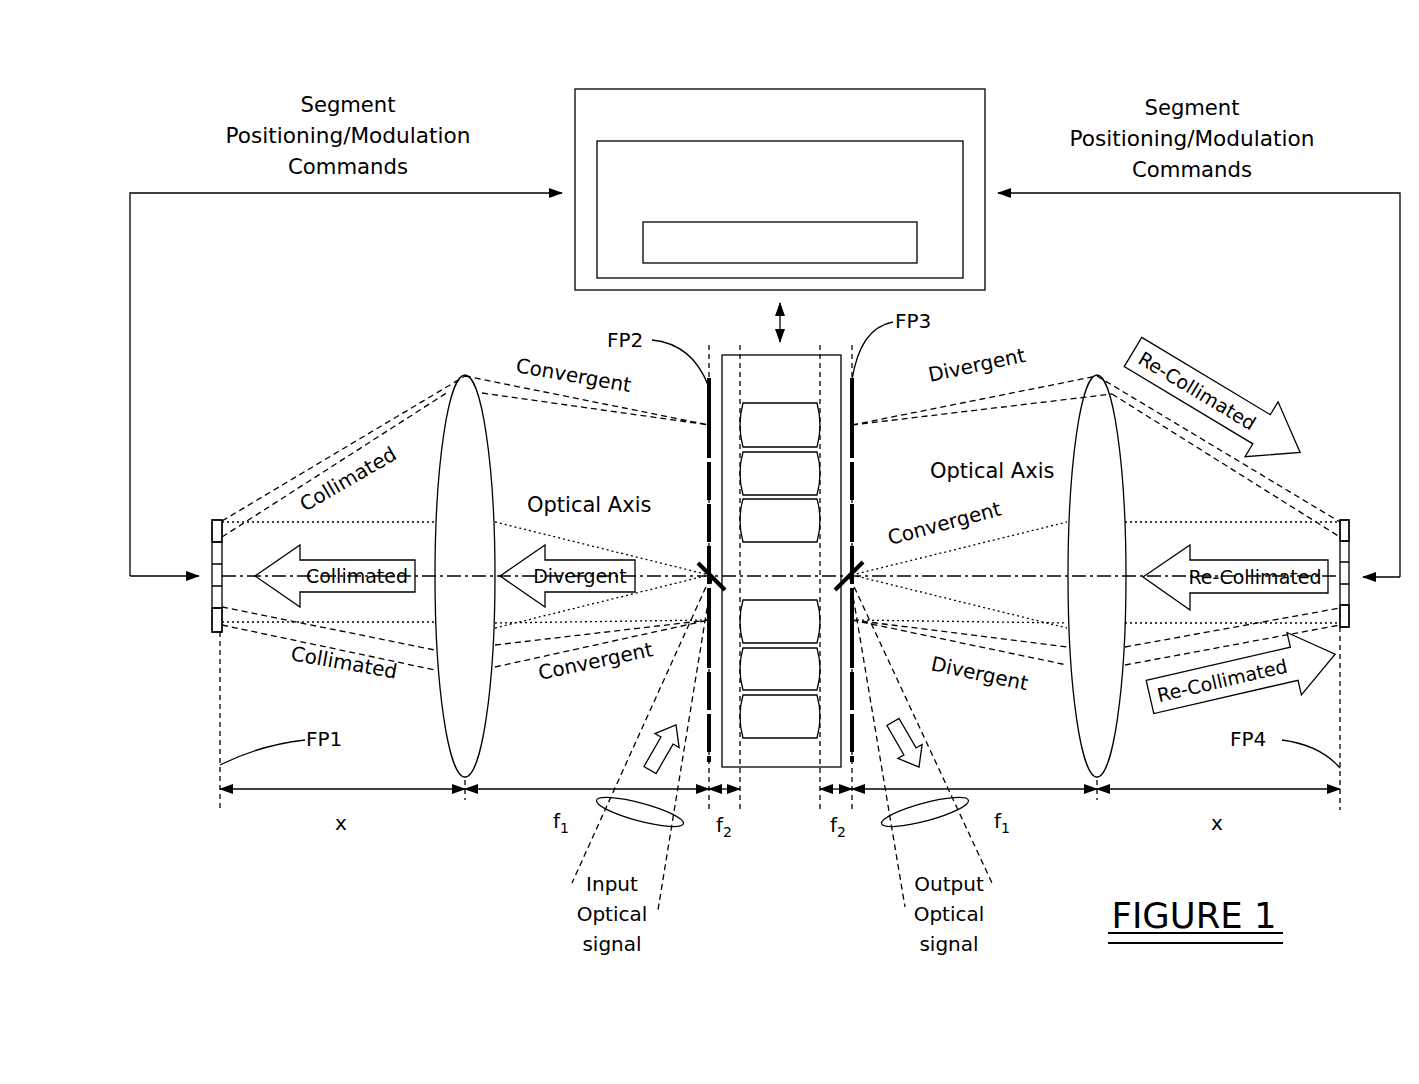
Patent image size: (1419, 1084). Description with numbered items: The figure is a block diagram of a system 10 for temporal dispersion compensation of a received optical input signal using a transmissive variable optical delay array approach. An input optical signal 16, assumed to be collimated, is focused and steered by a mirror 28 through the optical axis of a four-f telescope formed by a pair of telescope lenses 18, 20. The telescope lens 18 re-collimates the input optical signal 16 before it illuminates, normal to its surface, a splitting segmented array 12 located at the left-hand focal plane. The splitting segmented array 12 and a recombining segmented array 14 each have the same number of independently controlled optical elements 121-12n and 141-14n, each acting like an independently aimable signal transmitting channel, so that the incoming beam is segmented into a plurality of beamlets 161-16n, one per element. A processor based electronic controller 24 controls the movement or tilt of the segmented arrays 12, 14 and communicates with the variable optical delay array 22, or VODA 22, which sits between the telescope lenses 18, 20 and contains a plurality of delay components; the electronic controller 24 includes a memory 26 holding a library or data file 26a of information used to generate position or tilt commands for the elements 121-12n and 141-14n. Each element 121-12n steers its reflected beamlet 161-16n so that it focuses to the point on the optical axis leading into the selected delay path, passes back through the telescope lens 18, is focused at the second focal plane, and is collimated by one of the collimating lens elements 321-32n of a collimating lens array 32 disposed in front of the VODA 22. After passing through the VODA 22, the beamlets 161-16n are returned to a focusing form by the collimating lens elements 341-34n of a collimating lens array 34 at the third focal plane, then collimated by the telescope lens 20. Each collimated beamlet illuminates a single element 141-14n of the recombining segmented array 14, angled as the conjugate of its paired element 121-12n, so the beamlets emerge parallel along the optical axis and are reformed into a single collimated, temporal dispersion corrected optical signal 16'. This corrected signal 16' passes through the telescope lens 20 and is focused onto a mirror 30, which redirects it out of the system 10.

The system 10 is at (1193, 322).
The splitting segmented array 12 is at (198, 592).
The optical element of splitting segmented array 121 is at (212, 520).
The optical element of splitting segmented array 12n is at (202, 632).
The recombining segmented array 14 is at (1363, 598).
The optical element of recombining segmented array 141 is at (1350, 522).
The optical element of recombining segmented array 14n is at (1350, 627).
The input optical signal 16 is at (633, 744).
The beamlet 161 is at (500, 375).
The beamlet 16n is at (262, 620).
The temporal dispersion corrected optical signal 16' is at (1014, 684).
The telescope lens 18 is at (478, 478).
The telescope lens 20 is at (1080, 450).
The variable optical delay array (VODA) 22 is at (800, 355).
The electronic controller 24 is at (595, 89).
The memory 26 is at (597, 218).
The library or data file 26a is at (643, 258).
The mirror 28 is at (703, 562).
The mirror 30 is at (853, 568).
The collimating lens array 32 is at (700, 453).
The collimating lens element 321 is at (708, 425).
The collimating lens element 32n is at (708, 718).
The collimating lens array 34 is at (862, 440).
The collimating lens element 341 is at (852, 425).
The collimating lens element 34n is at (856, 715).